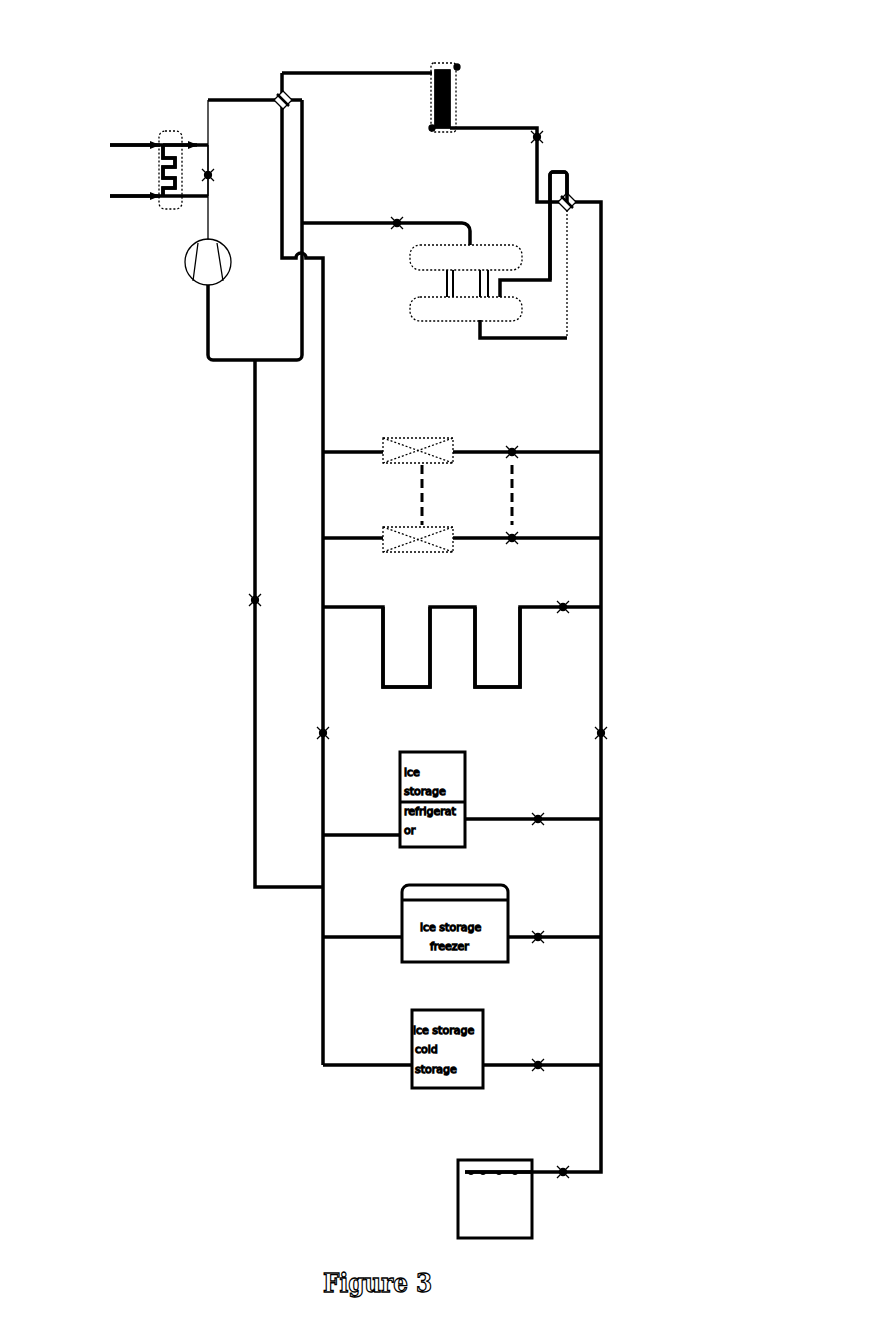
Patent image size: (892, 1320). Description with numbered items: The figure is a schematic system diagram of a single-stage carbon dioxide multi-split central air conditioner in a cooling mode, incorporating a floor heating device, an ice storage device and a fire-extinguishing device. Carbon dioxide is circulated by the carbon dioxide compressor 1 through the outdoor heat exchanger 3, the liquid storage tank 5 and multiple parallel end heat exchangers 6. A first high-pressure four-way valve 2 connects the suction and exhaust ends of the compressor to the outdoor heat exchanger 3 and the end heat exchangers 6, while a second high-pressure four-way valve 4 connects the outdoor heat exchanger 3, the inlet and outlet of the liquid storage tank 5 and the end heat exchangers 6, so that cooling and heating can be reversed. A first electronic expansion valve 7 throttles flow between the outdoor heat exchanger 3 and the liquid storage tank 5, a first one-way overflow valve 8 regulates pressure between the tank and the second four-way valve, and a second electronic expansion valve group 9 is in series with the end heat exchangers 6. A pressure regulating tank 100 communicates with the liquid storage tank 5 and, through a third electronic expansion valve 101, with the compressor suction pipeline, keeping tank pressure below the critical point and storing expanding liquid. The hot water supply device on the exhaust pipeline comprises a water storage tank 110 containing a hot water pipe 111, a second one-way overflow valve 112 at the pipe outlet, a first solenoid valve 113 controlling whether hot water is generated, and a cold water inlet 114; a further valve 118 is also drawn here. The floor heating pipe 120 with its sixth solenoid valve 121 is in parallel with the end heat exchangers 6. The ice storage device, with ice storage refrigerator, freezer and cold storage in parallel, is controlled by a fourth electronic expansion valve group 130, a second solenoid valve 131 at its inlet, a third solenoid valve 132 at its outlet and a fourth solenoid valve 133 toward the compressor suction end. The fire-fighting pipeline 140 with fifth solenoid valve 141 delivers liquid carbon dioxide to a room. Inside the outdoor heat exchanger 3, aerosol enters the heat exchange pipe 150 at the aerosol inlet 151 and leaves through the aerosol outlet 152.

The carbon dioxide compressor 1 is at (188, 262).
The first high-pressure four-way valve 2 is at (276, 96).
The outdoor heat exchanger 3 is at (428, 64).
The second high-pressure four-way valve 4 is at (574, 197).
The liquid storage tank 5 is at (417, 312).
The end heat exchanger 6 is at (420, 525).
The first electronic expansion valve 7 is at (541, 133).
The first one-way overflow valve 8 is at (548, 230).
The second electronic expansion valve group 9 is at (516, 534).
The pressure regulating tank 100 is at (472, 250).
The third electronic expansion valve 101 is at (400, 219).
The water storage tank 110 is at (164, 133).
The hot water pipe 111 is at (162, 176).
The second one-way overflow valve 112 is at (185, 142).
The first solenoid valve 113 is at (122, 144).
The cold water inlet 114 is at (122, 194).
The valve 118 is at (213, 171).
The floor heating pipe 120 is at (523, 655).
The sixth solenoid valve 121 is at (566, 603).
The fourth electronic expansion valve group 130 is at (541, 1062).
The second solenoid valve 131 is at (604, 729).
The third solenoid valve 132 is at (328, 730).
The fourth solenoid valve 133 is at (259, 597).
The fire-fighting pipeline 140 is at (524, 1168).
The fifth solenoid valve 141 is at (566, 1167).
The heat exchange pipe 150 is at (456, 105).
The aerosol inlet 151 is at (428, 128).
The aerosol outlet 152 is at (461, 67).